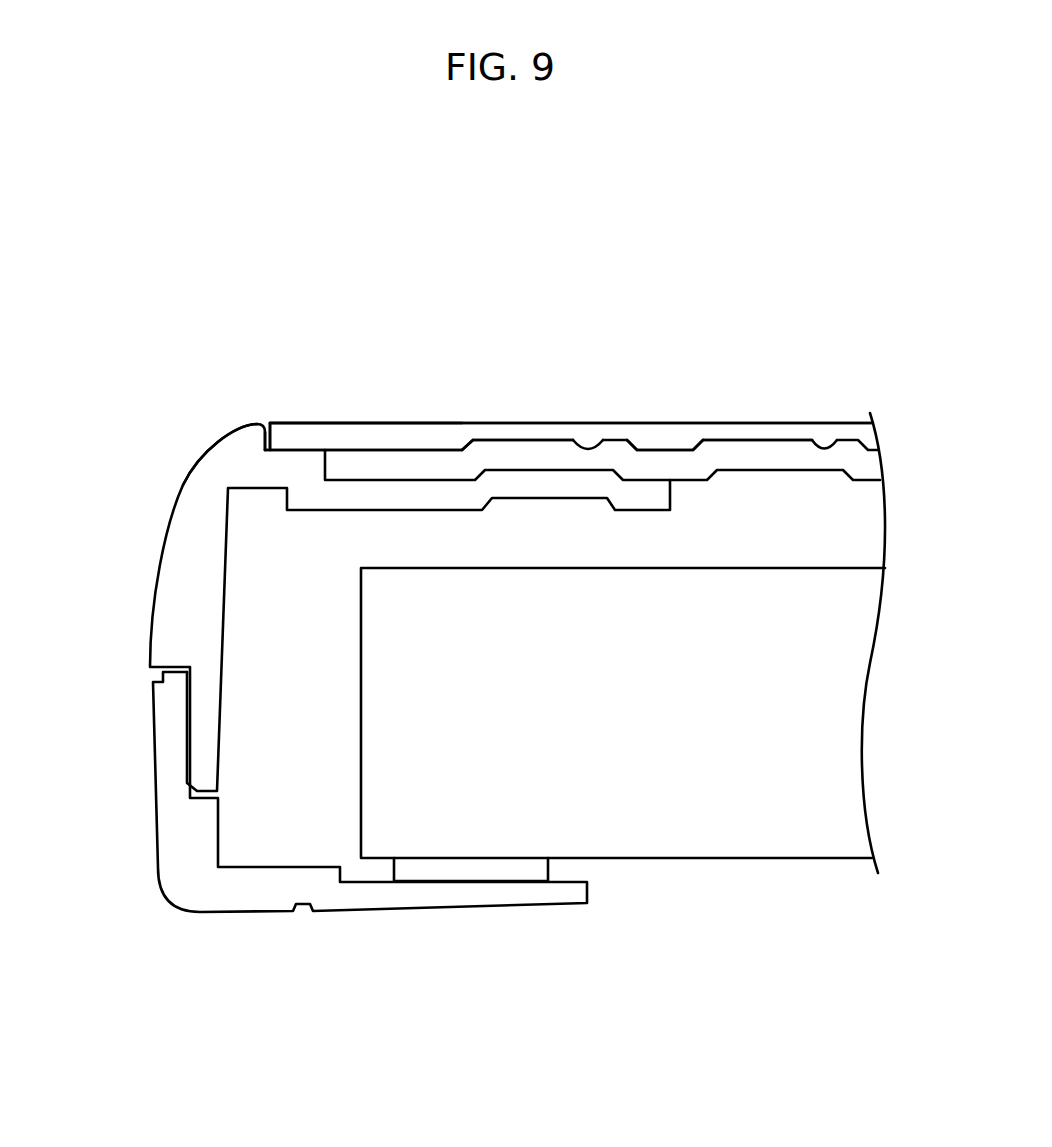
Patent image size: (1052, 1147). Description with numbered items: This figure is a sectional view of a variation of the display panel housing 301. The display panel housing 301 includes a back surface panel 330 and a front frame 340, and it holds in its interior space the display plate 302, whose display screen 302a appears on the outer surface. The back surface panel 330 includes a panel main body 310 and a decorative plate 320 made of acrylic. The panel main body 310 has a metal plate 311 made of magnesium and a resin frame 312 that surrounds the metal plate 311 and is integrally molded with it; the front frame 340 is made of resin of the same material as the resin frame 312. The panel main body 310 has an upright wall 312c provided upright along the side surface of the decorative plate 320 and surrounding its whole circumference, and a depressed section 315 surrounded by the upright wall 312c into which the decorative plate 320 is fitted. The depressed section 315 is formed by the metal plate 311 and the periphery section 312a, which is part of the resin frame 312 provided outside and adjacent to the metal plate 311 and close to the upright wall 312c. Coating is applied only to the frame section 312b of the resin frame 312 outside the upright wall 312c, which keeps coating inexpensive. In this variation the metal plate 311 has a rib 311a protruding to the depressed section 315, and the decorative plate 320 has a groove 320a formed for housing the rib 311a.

The display panel housing 301 is at (142, 485).
The front frame 340 is at (203, 893).
The display plate 302 is at (781, 762).
The display screen 302a is at (662, 858).
The panel main body 310 is at (483, 283).
The metal plate 311 is at (426, 462).
The rib 311a is at (535, 438).
The resin frame 312 is at (410, 327).
The periphery section 312a is at (303, 447).
The frame section 312b is at (212, 437).
The upright wall 312c is at (284, 437).
The depressed section 315 is at (677, 440).
The decorative plate 320 is at (643, 430).
The groove 320a is at (602, 440).
The back surface panel 330 is at (553, 298).